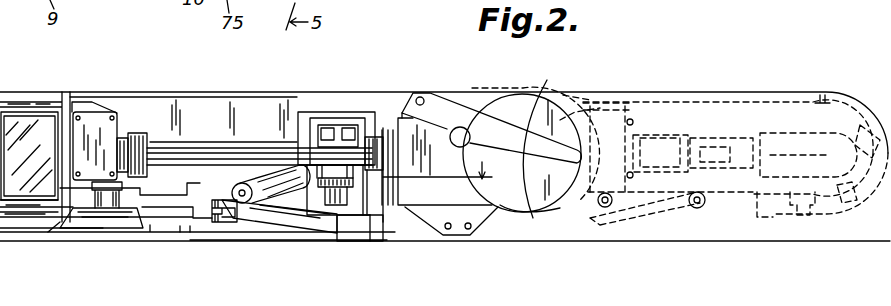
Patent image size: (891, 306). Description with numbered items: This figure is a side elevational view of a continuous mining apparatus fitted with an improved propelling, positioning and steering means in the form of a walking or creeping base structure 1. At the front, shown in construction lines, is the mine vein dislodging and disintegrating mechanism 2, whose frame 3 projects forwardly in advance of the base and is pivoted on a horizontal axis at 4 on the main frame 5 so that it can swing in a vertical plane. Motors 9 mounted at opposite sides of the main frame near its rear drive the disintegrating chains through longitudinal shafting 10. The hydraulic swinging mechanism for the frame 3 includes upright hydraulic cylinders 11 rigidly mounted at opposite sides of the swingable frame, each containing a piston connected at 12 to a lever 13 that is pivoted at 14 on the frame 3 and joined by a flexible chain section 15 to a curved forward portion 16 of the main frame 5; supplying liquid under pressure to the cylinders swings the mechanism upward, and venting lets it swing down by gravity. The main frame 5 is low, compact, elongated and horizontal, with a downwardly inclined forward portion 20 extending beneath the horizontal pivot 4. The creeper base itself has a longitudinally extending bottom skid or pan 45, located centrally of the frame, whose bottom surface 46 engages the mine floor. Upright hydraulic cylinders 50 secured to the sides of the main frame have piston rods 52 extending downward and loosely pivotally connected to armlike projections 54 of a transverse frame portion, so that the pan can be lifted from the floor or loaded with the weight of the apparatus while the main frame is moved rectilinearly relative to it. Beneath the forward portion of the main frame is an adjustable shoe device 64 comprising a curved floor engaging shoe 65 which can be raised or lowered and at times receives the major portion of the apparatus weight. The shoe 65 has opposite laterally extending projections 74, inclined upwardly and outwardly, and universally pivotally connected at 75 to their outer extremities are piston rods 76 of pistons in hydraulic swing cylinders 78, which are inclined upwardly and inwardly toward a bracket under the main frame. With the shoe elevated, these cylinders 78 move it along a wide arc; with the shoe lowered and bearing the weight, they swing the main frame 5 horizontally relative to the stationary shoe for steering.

The walking or creeping base structure 1 is at (184, 251).
The dislodging and disintegrating mechanism 2 is at (828, 90).
The frame 3 is at (723, 82).
The horizontal pivot axis 4 is at (540, 97).
The main frame 5 is at (334, 100).
The motor 9 is at (37, 103).
The longitudinal shafting 10 is at (192, 152).
The upright hydraulic cylinder 11 is at (602, 127).
The piston connection 12 is at (598, 213).
The lever 13 is at (630, 220).
The lever pivot 14 is at (700, 209).
The flexible chain section 15 is at (570, 113).
The curved forward portion of main frame 16 is at (534, 207).
The downwardly inclined forward portion 20 is at (438, 217).
The bottom skid or pan 45 is at (127, 235).
The bottom surface 46 is at (88, 240).
The upright hydraulic cylinder 50 is at (138, 183).
The piston rod 52 is at (132, 193).
The armlike projection 54 is at (85, 218).
The adjustable shoe device 64 is at (384, 226).
The curved floor engaging shoe 65 is at (360, 227).
The laterally extending projection 74 is at (295, 227).
The universal pivotal connection 75 is at (229, 221).
The piston rod 76 is at (233, 193).
The hydraulic swing cylinder 78 is at (262, 182).